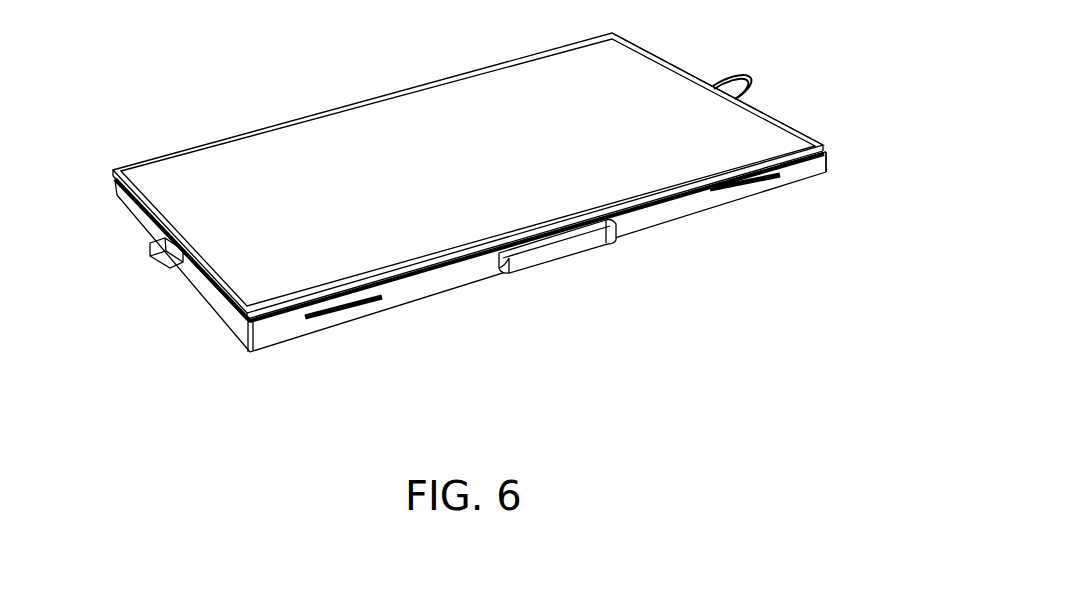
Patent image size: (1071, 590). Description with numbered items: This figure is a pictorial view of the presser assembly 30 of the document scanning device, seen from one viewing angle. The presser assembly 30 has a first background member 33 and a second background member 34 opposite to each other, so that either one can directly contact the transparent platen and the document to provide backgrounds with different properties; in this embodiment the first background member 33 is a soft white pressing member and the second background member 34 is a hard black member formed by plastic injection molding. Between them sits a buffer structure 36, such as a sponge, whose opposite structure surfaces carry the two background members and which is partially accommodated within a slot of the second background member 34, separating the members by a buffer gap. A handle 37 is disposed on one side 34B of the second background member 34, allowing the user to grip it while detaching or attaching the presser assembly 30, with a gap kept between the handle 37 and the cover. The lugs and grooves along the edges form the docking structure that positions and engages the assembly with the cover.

The presser assembly 30 is at (261, 121).
The first background member 33 is at (691, 70).
The second background member 34 is at (474, 291).
The side of the second background member 34B is at (661, 214).
The buffer structure 36 is at (801, 159).
The handle 37 is at (574, 250).